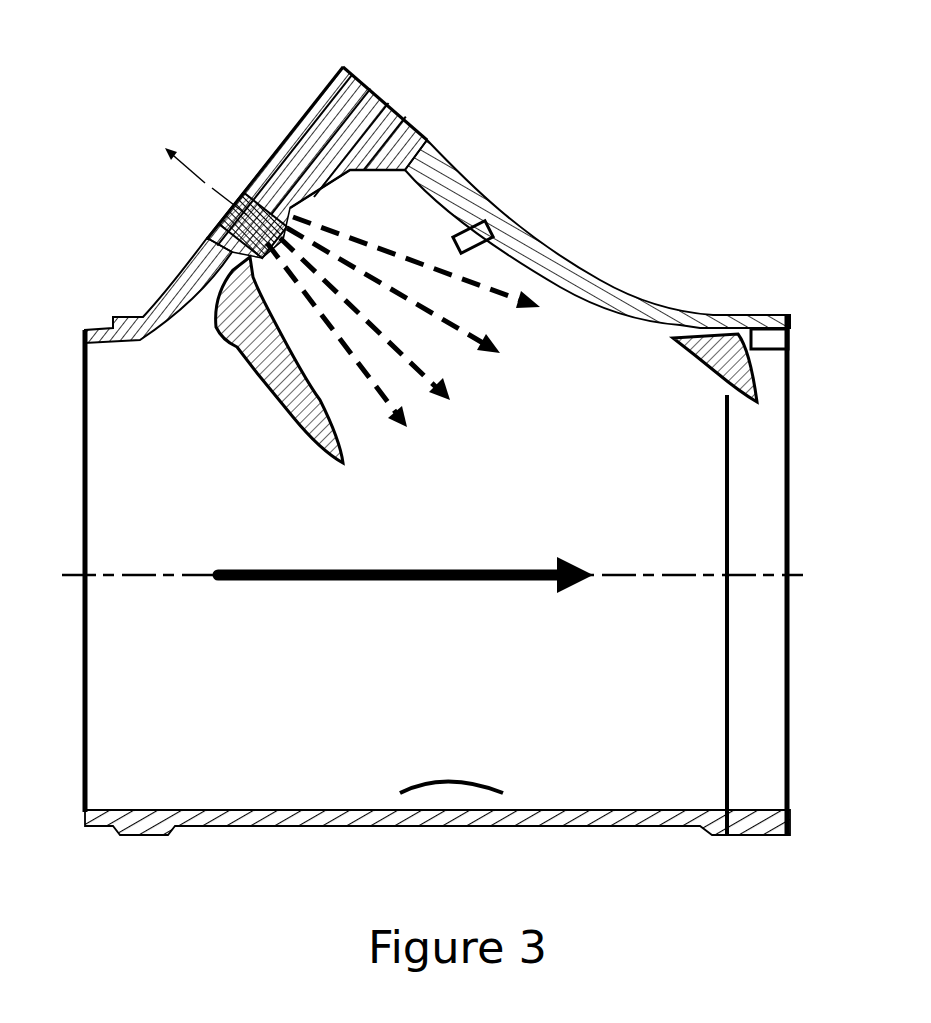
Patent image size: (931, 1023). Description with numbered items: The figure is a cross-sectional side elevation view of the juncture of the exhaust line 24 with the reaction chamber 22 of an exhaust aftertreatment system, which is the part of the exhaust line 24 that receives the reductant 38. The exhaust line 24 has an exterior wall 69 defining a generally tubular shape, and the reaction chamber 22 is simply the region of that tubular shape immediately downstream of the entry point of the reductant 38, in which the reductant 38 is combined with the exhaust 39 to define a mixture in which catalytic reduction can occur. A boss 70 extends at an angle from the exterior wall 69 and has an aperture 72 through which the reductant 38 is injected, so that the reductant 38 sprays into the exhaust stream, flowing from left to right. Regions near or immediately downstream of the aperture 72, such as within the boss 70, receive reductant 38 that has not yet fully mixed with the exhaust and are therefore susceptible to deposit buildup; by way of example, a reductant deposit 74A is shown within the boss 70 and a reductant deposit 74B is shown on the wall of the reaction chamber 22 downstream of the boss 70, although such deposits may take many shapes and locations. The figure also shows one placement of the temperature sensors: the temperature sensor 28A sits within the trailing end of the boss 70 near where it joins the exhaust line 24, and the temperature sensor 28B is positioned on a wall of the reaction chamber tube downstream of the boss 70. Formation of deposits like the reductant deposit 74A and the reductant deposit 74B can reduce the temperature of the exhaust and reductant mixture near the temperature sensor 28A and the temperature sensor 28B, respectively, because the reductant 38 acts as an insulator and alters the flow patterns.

The reaction chamber 22 is at (571, 723).
The exhaust line 24 is at (68, 245).
The temperature sensor 28A is at (482, 228).
The temperature sensor 28B is at (772, 330).
The reductant 38 is at (405, 190).
The exhaust 39 is at (307, 574).
The exterior wall 69 is at (263, 822).
The boss 70 is at (400, 104).
The aperture 72 is at (260, 197).
The reductant deposit 74A is at (257, 373).
The reductant deposit 74B is at (720, 348).